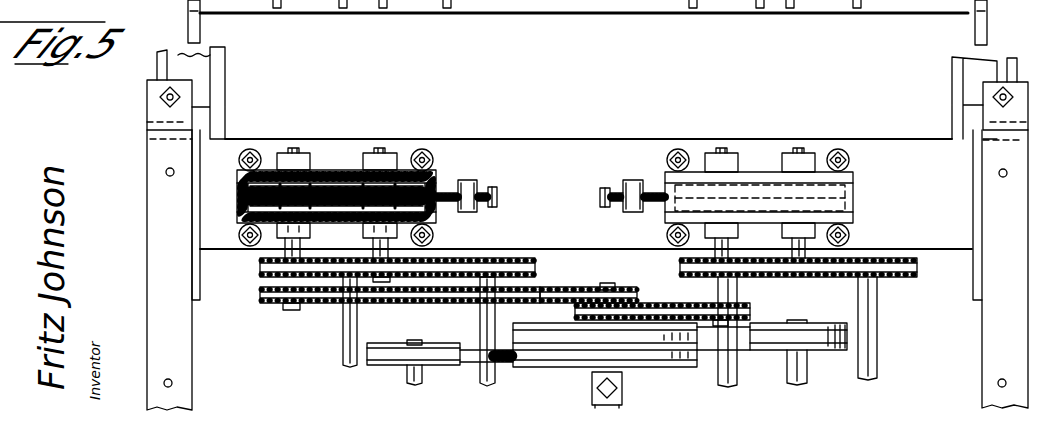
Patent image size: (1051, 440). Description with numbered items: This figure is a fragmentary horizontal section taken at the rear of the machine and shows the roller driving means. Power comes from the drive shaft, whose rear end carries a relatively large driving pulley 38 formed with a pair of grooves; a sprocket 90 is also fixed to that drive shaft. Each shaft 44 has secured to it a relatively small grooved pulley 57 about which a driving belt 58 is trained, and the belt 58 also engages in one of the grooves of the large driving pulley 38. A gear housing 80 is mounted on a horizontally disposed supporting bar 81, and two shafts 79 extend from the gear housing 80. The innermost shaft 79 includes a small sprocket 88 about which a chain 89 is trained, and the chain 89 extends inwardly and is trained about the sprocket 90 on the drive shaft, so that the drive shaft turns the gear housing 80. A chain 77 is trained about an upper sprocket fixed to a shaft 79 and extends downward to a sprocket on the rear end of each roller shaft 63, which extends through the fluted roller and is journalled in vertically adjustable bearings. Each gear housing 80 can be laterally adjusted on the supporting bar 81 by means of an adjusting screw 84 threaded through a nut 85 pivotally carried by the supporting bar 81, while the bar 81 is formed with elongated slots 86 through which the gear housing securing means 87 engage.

The driving pulley 38 is at (668, 368).
The shaft 44 is at (413, 340).
The grooved pulley 57 is at (383, 367).
The driving belt 58 is at (468, 357).
The roller shaft 63 is at (343, 340).
The chain 77 is at (335, 15).
The shaft 79 is at (289, 311).
The gear housing 80 is at (440, 178).
The supporting bar 81 is at (533, 14).
The adjusting screw 84 is at (498, 192).
The nut 85 is at (470, 180).
The elongated slots 86 is at (371, 131).
The gear housing securing means 87 is at (422, 149).
The small sprocket 88 is at (272, 306).
The chain 89 is at (545, 289).
The sprocket 90 is at (617, 285).